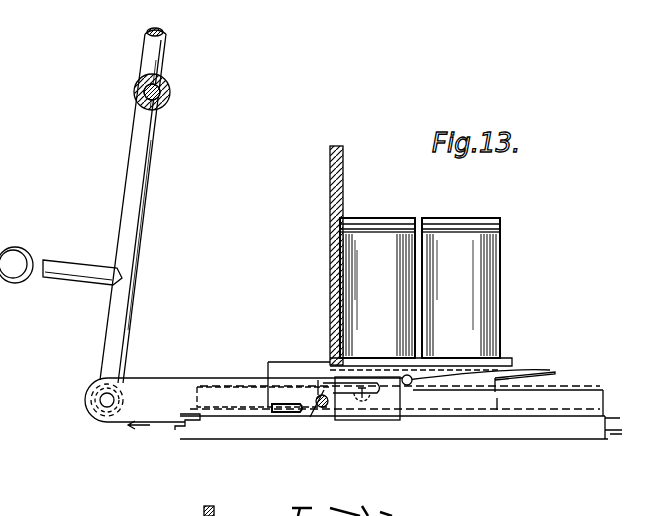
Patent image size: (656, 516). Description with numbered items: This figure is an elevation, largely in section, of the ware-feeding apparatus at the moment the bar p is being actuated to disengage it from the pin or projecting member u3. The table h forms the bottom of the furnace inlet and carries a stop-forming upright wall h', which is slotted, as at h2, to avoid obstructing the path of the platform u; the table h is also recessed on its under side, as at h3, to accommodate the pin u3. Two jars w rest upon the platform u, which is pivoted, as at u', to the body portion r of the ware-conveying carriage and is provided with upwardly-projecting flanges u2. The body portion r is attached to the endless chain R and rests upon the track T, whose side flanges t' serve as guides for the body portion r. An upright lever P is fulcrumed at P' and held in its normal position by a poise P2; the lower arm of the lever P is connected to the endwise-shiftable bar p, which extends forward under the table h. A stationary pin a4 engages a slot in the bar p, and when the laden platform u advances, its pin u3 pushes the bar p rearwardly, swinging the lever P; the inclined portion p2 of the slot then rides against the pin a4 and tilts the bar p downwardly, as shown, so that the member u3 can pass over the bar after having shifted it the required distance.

The upright lever P is at (124, 205).
The fulcrum P' is at (131, 103).
The poise P2 is at (61, 266).
The endwise-shiftable bar p is at (162, 378).
The inclined portion of slot p2 is at (320, 388).
The endless track T is at (394, 429).
The upwardly-projecting flange t' is at (613, 396).
The endless chain R is at (381, 437).
The table h is at (390, 369).
The upright wall h' is at (318, 255).
The slot h2 is at (352, 330).
The recess h3 is at (330, 376).
The ware w is at (420, 288).
The platform u is at (403, 414).
The pivot u' is at (372, 431).
The upwardly-projecting flange u2 is at (268, 362).
The laterally-projecting pin u3 is at (415, 372).
The stationary pin a4 is at (338, 395).
The body portion r is at (497, 402).